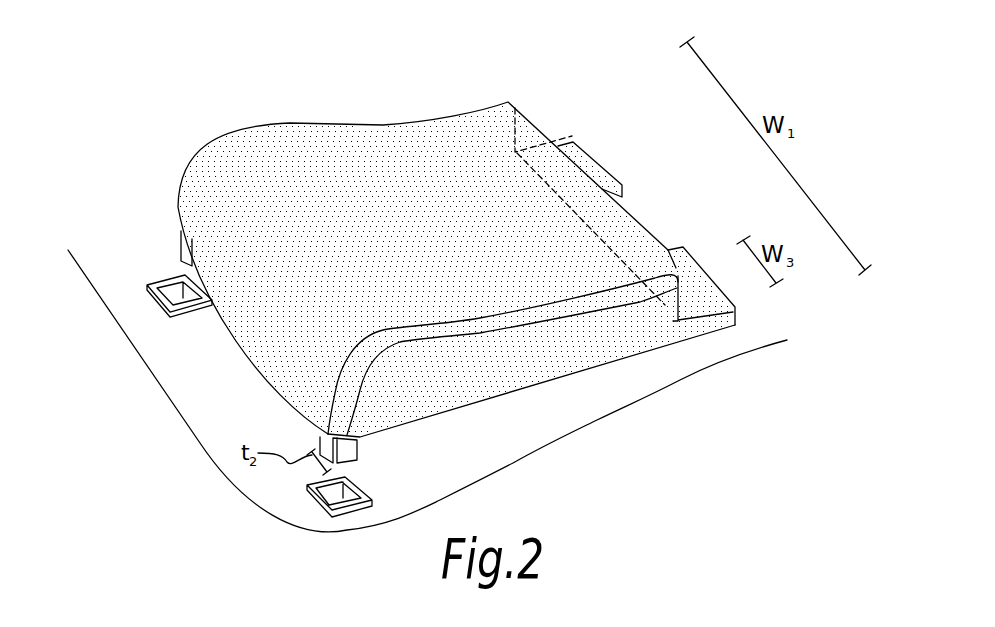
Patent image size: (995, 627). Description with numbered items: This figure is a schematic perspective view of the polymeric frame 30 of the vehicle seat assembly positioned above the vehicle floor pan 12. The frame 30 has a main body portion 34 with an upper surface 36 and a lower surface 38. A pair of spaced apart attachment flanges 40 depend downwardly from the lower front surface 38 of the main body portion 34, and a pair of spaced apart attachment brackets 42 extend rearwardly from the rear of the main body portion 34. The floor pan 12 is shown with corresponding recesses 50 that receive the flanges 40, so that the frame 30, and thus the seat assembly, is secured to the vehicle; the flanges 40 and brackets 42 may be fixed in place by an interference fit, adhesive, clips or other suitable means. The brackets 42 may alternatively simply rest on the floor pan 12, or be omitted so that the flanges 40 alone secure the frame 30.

The vehicle floor pan 12 is at (162, 365).
The polymeric frame 30 is at (427, 245).
The main body portion 34 is at (202, 170).
The upper surface 36 is at (378, 168).
The lower surface 38 is at (469, 402).
The attachment flanges 40 is at (181, 236).
The attachment brackets 42 is at (590, 162).
The recesses 50 is at (147, 286).